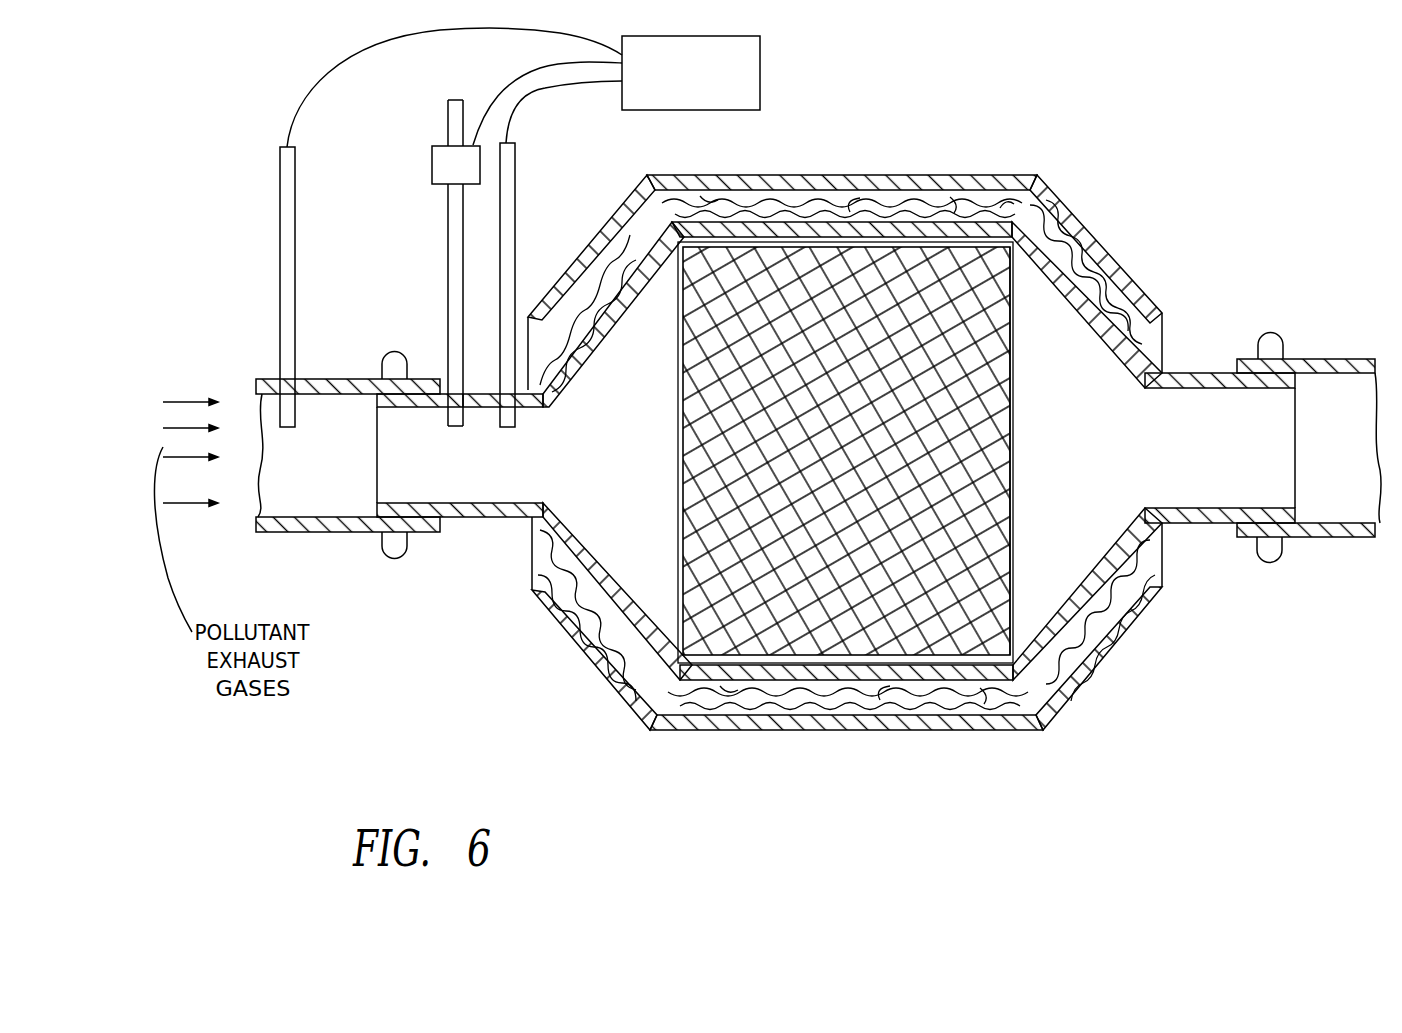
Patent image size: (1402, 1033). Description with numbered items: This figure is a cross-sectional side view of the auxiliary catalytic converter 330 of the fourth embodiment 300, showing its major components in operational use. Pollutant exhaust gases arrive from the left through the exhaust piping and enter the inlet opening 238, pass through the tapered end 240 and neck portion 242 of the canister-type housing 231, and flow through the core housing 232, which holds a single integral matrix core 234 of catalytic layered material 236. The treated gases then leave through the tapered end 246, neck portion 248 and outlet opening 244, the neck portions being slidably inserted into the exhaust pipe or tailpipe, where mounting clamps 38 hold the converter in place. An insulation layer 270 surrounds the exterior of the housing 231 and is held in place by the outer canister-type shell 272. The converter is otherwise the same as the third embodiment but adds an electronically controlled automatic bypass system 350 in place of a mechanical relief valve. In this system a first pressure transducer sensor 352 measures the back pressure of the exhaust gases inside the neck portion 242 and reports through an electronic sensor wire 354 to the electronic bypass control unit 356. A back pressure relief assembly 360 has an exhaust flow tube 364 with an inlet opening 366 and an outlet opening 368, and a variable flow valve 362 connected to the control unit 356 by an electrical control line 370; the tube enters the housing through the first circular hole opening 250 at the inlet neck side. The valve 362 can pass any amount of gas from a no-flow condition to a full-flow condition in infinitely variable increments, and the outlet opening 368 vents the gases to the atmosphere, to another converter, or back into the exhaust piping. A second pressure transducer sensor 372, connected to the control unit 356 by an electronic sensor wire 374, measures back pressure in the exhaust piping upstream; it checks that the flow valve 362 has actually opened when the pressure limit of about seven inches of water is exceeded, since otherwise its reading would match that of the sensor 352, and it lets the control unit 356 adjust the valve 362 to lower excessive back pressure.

The fourth embodiment 300 is at (838, 125).
The auxiliary catalytic converter 330 is at (568, 649).
The outer canister-type shell 272 is at (608, 204).
The canister-type housing 231 is at (652, 181).
The tapered end 240 is at (577, 360).
The tapered end 246 is at (1060, 605).
The insulation layer 270 is at (992, 210).
The core housing 232 is at (735, 250).
The matrix core 234 is at (992, 500).
The catalytic layered material 236 is at (980, 380).
The neck portion 242 is at (397, 503).
The inlet opening 238 is at (377, 457).
The outlet opening 244 is at (1297, 428).
The neck portion 248 is at (1180, 507).
The mounting clamps 38 is at (394, 355).
The electronically controlled automatic bypass system 350 is at (676, 22).
The electronic bypass control unit 356 is at (752, 50).
The electronic sensor wire 374 is at (333, 70).
The electrical control line 370 is at (536, 68).
The electronic sensor wire 354 is at (536, 105).
The second pressure transducer sensor 372 is at (285, 188).
The first pressure transducer sensor 352 is at (515, 240).
The back pressure relief assembly 360 is at (480, 222).
The exhaust flow tube 364 is at (446, 129).
The outlet opening 368 is at (461, 100).
The variable flow valve 362 is at (432, 168).
The inlet opening 366 is at (451, 416).
The first circular hole opening 250 is at (466, 400).